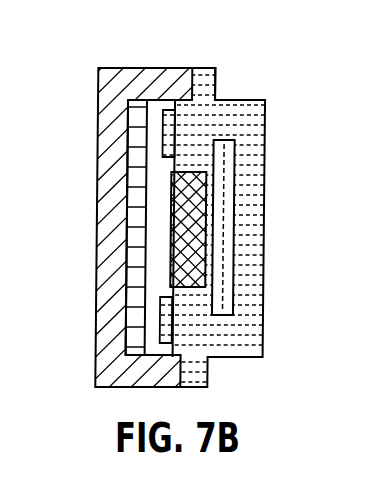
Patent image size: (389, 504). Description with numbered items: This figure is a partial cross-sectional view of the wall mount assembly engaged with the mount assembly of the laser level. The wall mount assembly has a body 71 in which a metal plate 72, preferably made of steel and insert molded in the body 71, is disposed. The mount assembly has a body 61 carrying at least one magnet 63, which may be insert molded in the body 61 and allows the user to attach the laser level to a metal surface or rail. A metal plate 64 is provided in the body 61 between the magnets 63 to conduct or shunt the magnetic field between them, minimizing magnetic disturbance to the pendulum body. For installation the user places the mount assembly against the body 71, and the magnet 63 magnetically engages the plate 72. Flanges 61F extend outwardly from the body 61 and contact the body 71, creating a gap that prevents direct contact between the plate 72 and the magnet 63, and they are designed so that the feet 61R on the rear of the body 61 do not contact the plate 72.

The body 61 is at (260, 118).
The flanges 61F is at (202, 68).
The feet 61R is at (163, 140).
The magnet 63 is at (197, 252).
The metal plate 64 is at (227, 212).
The body 71 is at (107, 308).
The metal plate 72 is at (137, 228).